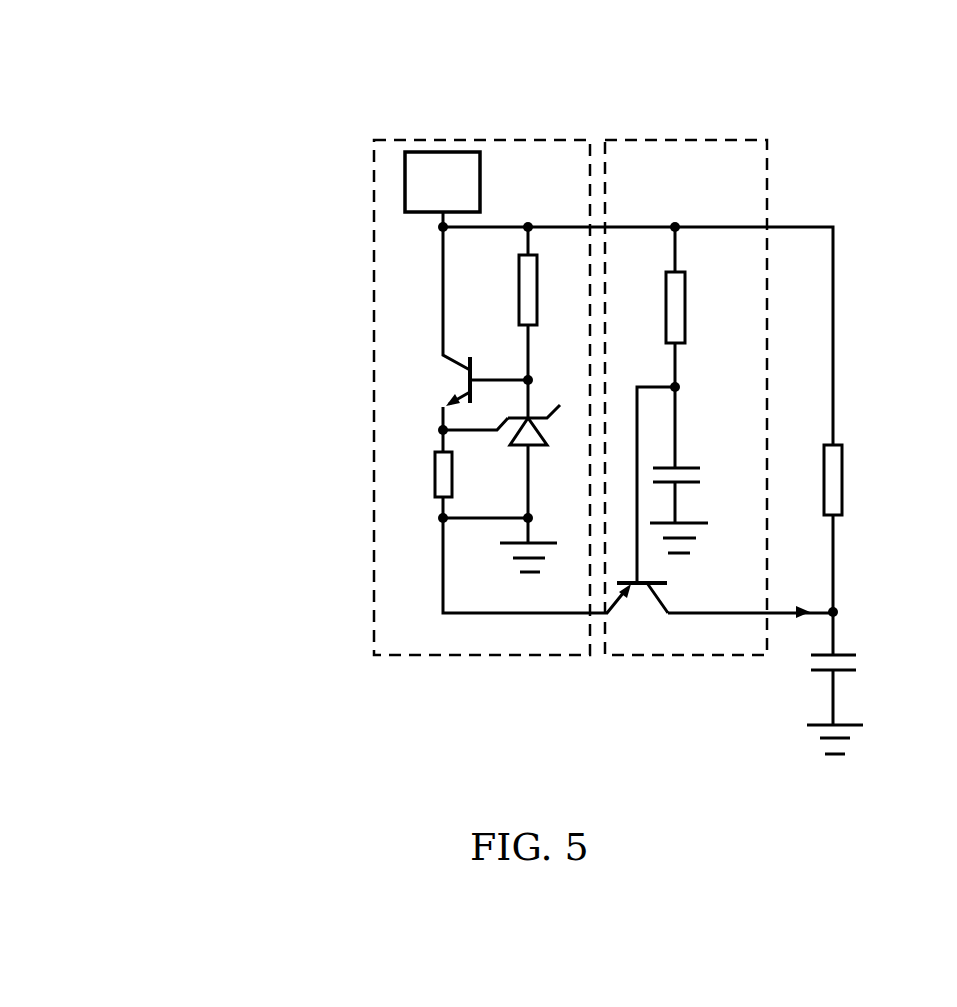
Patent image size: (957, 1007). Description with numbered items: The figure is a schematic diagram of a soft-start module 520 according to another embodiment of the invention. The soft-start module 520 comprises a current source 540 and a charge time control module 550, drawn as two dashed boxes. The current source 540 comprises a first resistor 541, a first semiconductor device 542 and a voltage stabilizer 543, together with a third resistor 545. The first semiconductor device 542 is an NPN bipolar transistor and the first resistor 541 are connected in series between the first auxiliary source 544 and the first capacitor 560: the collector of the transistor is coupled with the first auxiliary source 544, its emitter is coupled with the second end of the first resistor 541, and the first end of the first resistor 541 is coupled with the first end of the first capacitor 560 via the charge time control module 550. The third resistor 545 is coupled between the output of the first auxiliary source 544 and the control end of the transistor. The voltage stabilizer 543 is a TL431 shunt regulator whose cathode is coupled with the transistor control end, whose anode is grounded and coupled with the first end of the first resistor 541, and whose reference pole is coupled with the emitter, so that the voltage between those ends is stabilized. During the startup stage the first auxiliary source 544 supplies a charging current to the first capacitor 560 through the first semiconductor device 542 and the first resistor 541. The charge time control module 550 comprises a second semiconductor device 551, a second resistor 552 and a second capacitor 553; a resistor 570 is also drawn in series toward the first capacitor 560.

The soft-start module 520 is at (282, 95).
The current source 540 is at (460, 655).
The first resistor 541 is at (418, 474).
The first semiconductor device 542 is at (425, 385).
The voltage stabilizer 543 is at (543, 435).
The first auxiliary source 544 is at (441, 150).
The third resistor 545 is at (501, 290).
The charge time control module 550 is at (715, 653).
The second semiconductor device 551 is at (642, 612).
The second resistor 552 is at (648, 307).
The second capacitor 553 is at (692, 470).
The first capacitor 560 is at (866, 704).
The resistor 570 is at (862, 480).